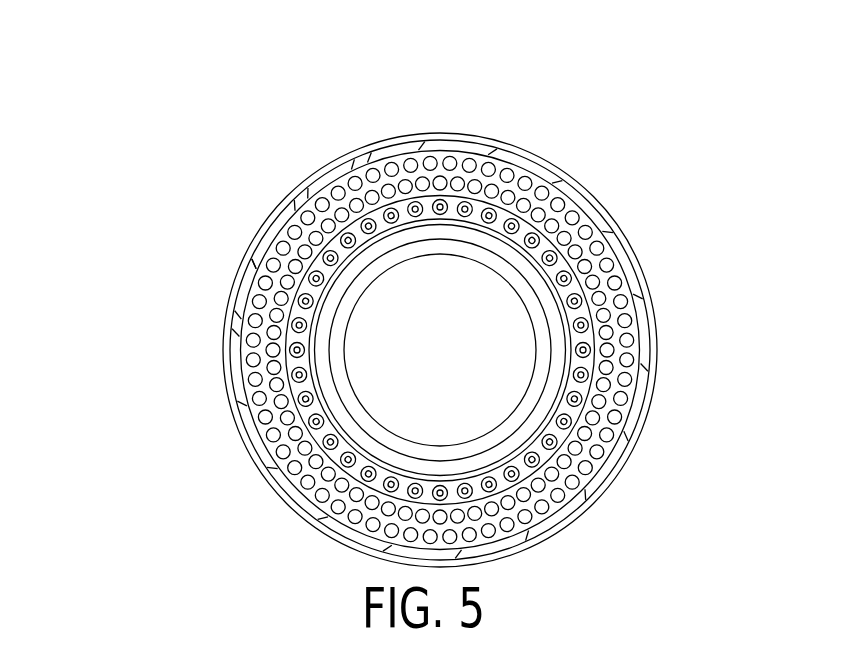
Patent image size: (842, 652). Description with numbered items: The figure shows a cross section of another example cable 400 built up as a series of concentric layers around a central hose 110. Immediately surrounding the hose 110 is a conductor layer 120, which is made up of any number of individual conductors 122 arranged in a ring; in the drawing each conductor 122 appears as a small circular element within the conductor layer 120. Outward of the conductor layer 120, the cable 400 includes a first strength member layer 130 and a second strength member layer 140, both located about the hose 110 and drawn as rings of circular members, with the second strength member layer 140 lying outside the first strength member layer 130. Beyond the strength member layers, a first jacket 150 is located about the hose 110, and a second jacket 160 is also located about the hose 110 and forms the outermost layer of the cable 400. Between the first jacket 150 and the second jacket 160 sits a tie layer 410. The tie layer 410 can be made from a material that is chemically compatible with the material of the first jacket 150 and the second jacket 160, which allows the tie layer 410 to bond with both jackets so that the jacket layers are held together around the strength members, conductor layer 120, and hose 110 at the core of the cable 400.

The cable 400 is at (389, 78).
The second jacket 160 is at (513, 143).
The tie layer 410 is at (630, 270).
The first jacket 150 is at (633, 410).
The second strength member layer 140 is at (562, 208).
The first strength member layer 130 is at (553, 477).
The conductor layer 120 is at (278, 362).
The conductor 122 is at (310, 423).
The hose 110 is at (373, 262).